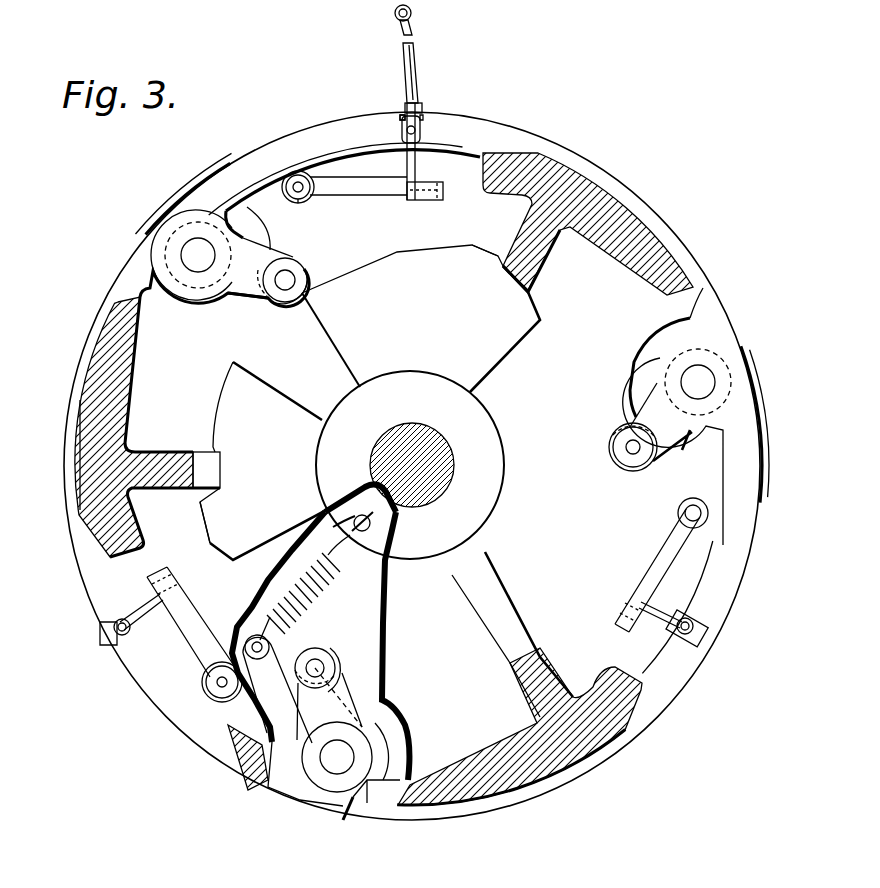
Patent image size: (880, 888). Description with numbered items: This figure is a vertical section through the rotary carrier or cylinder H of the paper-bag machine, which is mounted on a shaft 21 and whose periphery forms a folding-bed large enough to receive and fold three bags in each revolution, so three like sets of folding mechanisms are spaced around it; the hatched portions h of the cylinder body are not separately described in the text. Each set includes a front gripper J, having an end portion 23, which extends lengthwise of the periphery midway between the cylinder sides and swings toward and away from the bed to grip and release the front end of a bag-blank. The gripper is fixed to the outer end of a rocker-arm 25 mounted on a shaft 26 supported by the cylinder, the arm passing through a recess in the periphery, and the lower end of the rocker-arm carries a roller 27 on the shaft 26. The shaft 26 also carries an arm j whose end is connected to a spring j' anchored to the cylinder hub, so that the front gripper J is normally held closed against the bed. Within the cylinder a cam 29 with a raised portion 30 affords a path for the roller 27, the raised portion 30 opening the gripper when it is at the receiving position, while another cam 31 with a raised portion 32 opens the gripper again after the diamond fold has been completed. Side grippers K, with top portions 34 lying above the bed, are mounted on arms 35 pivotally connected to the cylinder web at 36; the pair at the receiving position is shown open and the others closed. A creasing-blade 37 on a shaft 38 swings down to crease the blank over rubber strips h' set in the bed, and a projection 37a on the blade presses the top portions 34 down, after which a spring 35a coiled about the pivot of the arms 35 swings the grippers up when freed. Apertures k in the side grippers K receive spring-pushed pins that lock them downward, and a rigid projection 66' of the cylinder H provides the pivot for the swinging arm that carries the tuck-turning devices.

The cylinder H is at (695, 283).
The pole pieces h is at (384, 479).
The strips h' is at (370, 105).
The front gripper J is at (158, 205).
The side grippers K is at (423, 140).
The apertures k is at (415, 128).
The arm j is at (488, 504).
The spring j' is at (355, 538).
The shaft 21 is at (443, 490).
The end portion 23 is at (290, 791).
The rocker-arm 25 is at (263, 257).
The shaft 26 is at (198, 243).
The roller 27 is at (295, 268).
The cam 29 is at (421, 318).
The raised portion 30 is at (470, 248).
The cam 31 is at (305, 415).
The raised portion 32 is at (206, 520).
The top portions 34 is at (418, 107).
The arms 35 is at (357, 182).
The spring 35a is at (281, 187).
The pivotal connection 36 is at (308, 200).
The creasing-blade 37 is at (404, 70).
The projection 37a is at (416, 72).
The shaft 38 is at (411, 13).
The rigid projection 66' is at (56, 449).